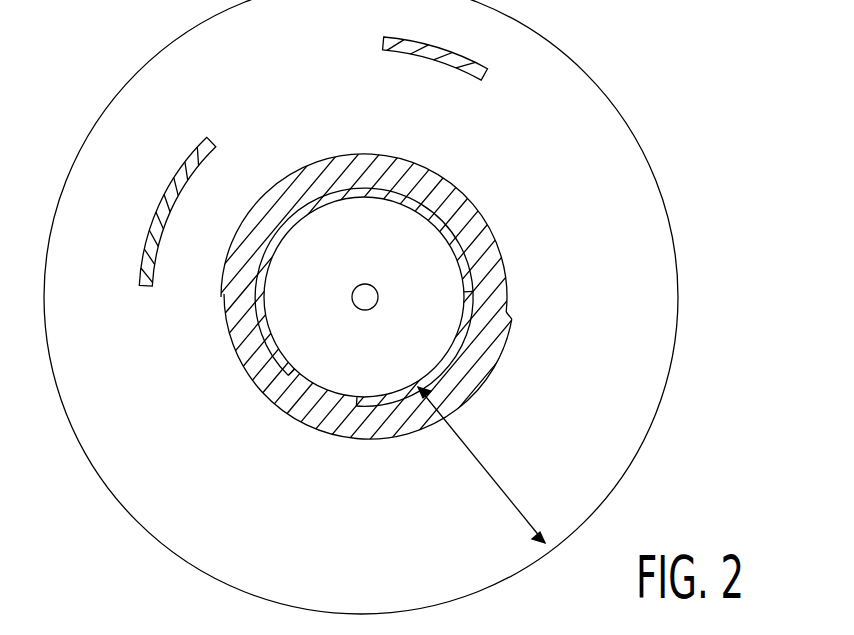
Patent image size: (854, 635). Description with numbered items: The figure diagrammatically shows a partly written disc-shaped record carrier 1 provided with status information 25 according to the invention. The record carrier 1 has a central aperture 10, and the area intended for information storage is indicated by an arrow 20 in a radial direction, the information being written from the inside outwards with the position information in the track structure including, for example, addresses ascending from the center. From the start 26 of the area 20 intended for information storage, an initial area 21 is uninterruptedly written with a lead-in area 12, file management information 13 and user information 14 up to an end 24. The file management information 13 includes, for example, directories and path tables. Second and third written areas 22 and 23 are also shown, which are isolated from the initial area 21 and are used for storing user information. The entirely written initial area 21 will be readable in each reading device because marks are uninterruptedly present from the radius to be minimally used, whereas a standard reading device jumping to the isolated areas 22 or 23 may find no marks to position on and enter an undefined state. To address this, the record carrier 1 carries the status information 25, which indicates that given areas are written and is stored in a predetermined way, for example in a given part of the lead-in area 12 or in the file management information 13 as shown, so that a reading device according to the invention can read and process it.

The record carrier 1 is at (638, 127).
The central aperture 10 is at (375, 290).
The lead-in area 12 is at (465, 330).
The file management information 13 is at (465, 265).
The user information 14 is at (477, 227).
The area intended for information storage 20 is at (488, 472).
The initial area 21 is at (403, 431).
The second written area 22 is at (150, 243).
The third written area 23 is at (442, 60).
The end 24 is at (512, 318).
The status information 25 is at (283, 352).
The start 26 is at (357, 395).